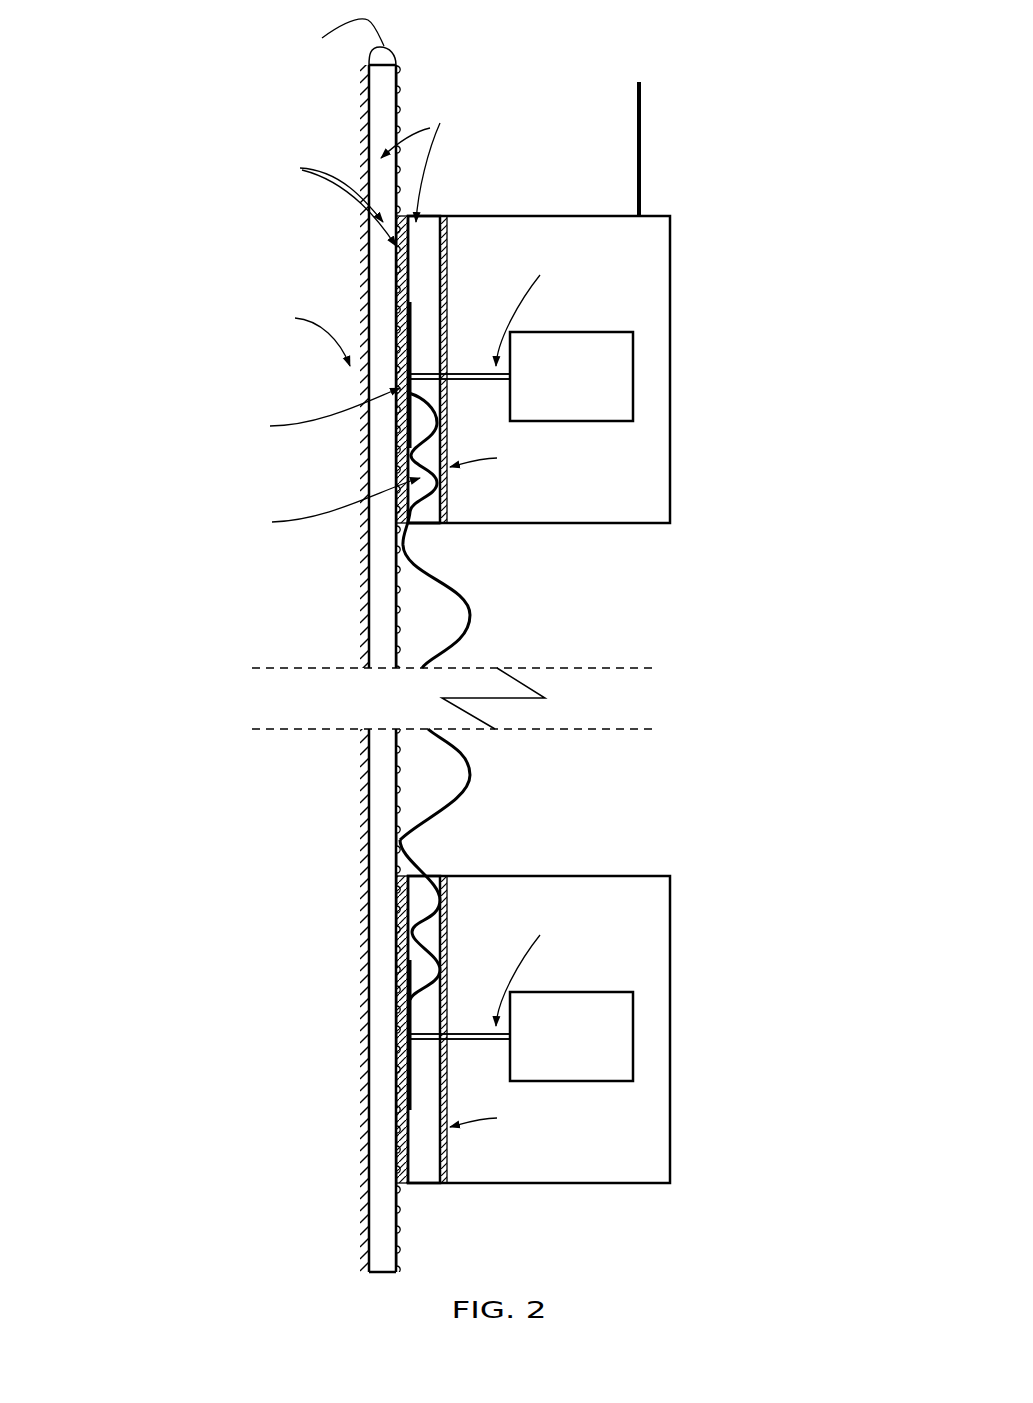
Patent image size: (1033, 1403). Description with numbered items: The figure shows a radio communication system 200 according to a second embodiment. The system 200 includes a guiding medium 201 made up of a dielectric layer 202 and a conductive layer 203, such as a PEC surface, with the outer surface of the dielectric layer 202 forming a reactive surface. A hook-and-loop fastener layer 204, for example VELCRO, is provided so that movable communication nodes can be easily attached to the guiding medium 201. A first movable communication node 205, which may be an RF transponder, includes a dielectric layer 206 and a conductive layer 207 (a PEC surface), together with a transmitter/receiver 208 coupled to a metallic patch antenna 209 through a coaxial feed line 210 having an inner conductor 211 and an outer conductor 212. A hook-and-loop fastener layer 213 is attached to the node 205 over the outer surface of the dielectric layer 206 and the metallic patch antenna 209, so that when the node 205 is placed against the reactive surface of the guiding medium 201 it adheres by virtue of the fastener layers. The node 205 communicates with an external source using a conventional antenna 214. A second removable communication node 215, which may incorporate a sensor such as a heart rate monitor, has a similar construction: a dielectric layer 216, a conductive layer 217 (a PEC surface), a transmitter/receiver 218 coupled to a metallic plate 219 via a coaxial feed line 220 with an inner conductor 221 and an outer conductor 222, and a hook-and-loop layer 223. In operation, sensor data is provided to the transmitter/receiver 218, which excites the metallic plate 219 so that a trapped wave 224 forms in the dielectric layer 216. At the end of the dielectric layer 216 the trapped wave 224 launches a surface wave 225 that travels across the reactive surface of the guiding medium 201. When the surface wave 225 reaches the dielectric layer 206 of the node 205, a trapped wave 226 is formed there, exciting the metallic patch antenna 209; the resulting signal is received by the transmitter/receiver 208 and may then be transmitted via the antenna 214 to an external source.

The radio communication system 200 is at (180, 568).
The guiding medium 201 is at (398, 52).
The dielectric layer 202 is at (381, 553).
The conductive layer 203 is at (362, 608).
The hook-and-loop fastener layer 204 is at (398, 88).
The first movable communication node 205 is at (672, 285).
The dielectric layer 206 is at (416, 262).
The conductive layer 207 is at (448, 523).
The transmitter/receiver 208 is at (634, 390).
The metallic patch antenna 209 is at (398, 310).
The coaxial feed line 210 is at (484, 366).
The inner conductor 211 is at (458, 382).
The outer conductor 212 is at (478, 366).
The hook-and-loop fastener layer 213 is at (406, 432).
The antenna 214 is at (642, 132).
The second removable communication node 215 is at (672, 945).
The dielectric layer 216 is at (424, 1172).
The conductive layer 217 is at (448, 1153).
The transmitter/receiver 218 is at (634, 1050).
The metallic plate 219 is at (400, 1065).
The coaxial feed line 220 is at (484, 1026).
The inner conductor 221 is at (458, 1042).
The outer conductor 222 is at (478, 1026).
The hook-and-loop layer 223 is at (400, 1147).
The trapped wave 224 is at (422, 887).
The surface wave 225 is at (470, 773).
The trapped wave 226 is at (441, 523).